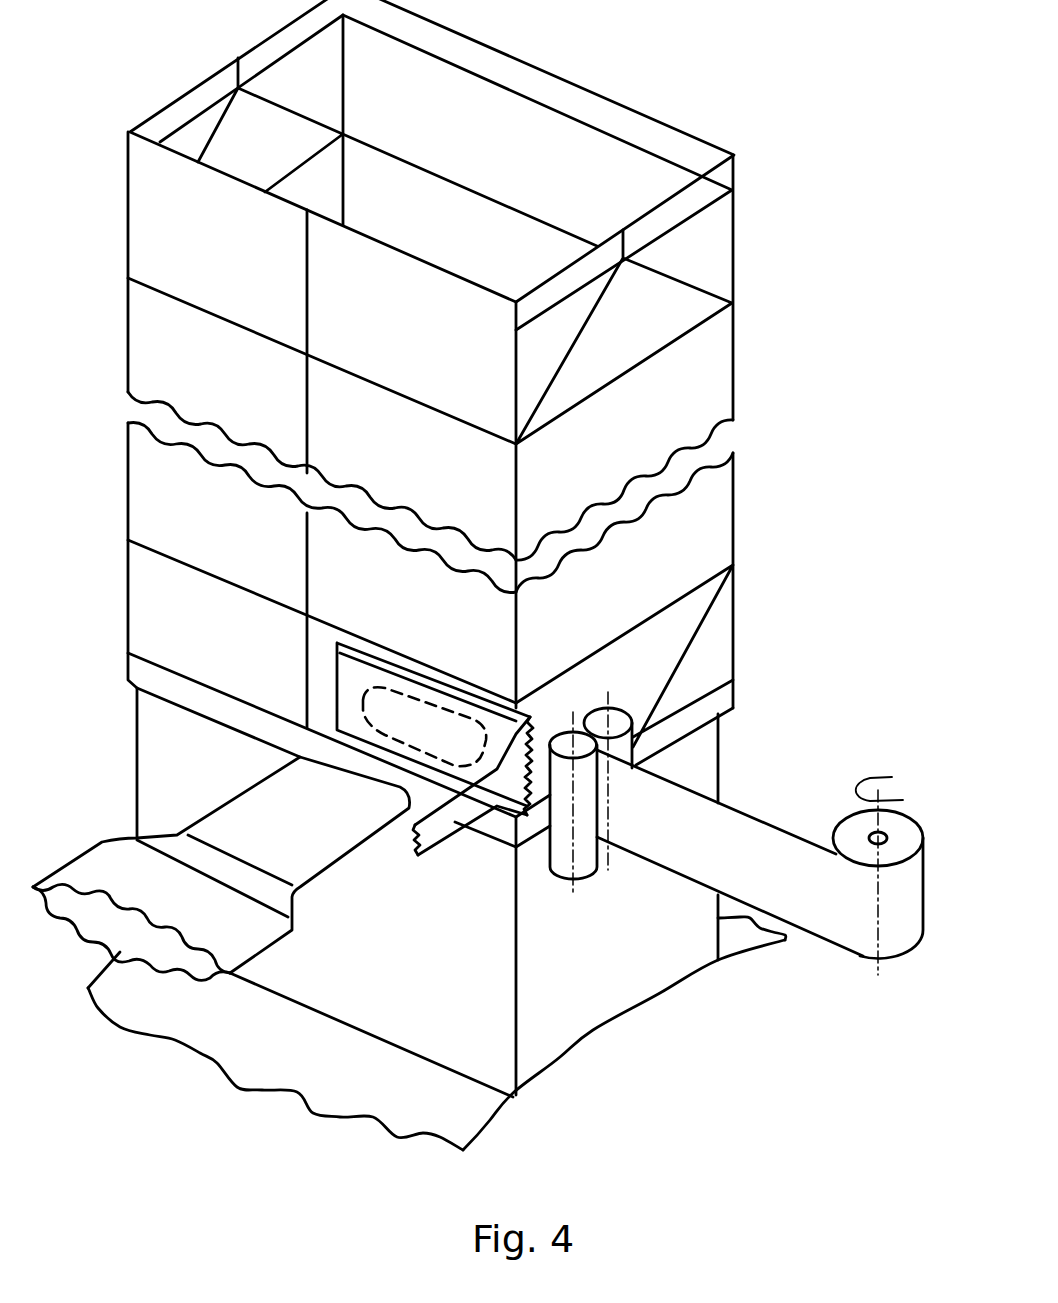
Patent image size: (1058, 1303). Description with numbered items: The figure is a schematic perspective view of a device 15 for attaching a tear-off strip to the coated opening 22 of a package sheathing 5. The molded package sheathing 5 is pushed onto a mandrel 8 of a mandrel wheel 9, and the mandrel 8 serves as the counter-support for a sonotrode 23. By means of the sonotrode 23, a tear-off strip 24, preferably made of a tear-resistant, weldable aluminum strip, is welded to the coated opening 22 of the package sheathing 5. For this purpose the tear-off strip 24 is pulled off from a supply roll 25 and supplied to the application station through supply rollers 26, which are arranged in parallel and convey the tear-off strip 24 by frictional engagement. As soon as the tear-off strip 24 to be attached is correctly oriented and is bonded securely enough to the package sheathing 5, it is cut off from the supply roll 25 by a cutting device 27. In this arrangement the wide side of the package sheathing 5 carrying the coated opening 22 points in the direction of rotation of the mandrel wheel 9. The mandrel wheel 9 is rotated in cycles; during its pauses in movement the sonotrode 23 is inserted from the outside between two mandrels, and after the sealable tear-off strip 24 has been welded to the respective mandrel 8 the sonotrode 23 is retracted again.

The package sheathing 5 is at (702, 370).
The mandrel 8 is at (383, 998).
The mandrel wheel 9 is at (272, 1035).
The device 15 is at (580, 995).
The coated opening 22 is at (423, 713).
The sonotrode 23 is at (282, 800).
The tear-off strip 24 is at (355, 672).
The supply roll 25 is at (848, 832).
The supply rollers 26 is at (587, 717).
The cutting device 27 is at (445, 827).